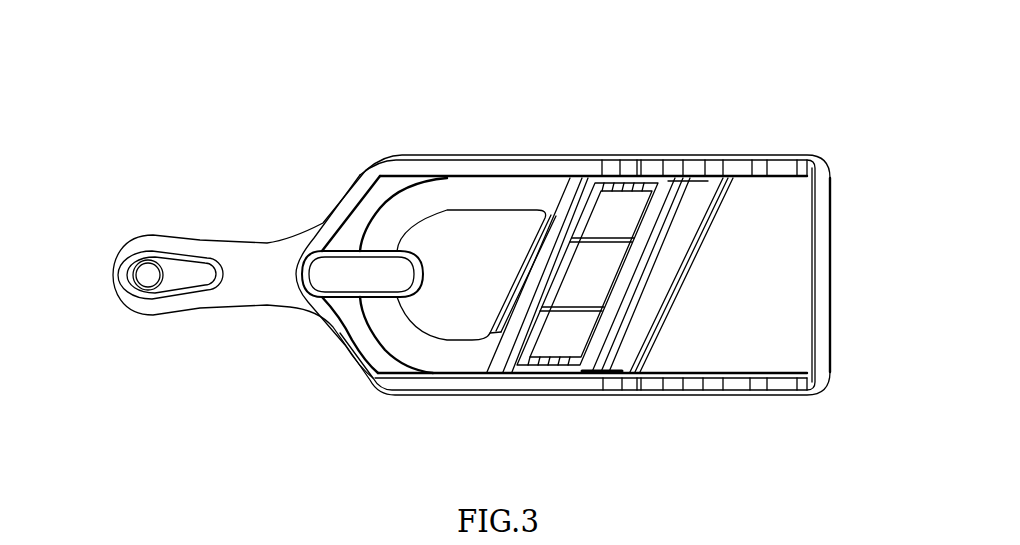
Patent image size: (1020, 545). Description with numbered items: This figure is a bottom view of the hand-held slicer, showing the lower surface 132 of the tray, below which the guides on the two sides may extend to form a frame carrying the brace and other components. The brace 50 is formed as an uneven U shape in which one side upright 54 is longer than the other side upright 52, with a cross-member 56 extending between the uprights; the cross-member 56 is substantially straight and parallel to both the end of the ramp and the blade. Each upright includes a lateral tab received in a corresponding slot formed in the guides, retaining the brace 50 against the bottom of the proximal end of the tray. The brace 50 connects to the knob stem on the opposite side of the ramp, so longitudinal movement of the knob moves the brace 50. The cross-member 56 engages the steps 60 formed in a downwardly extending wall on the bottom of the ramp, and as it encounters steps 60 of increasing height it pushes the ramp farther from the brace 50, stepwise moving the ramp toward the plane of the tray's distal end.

The brace 50 is at (470, 375).
The shorter side upright 52 is at (407, 333).
The longer side upright 54 is at (491, 200).
The cross-member 56 is at (537, 360).
The steps 60 is at (540, 300).
The lower surface 132 is at (495, 258).